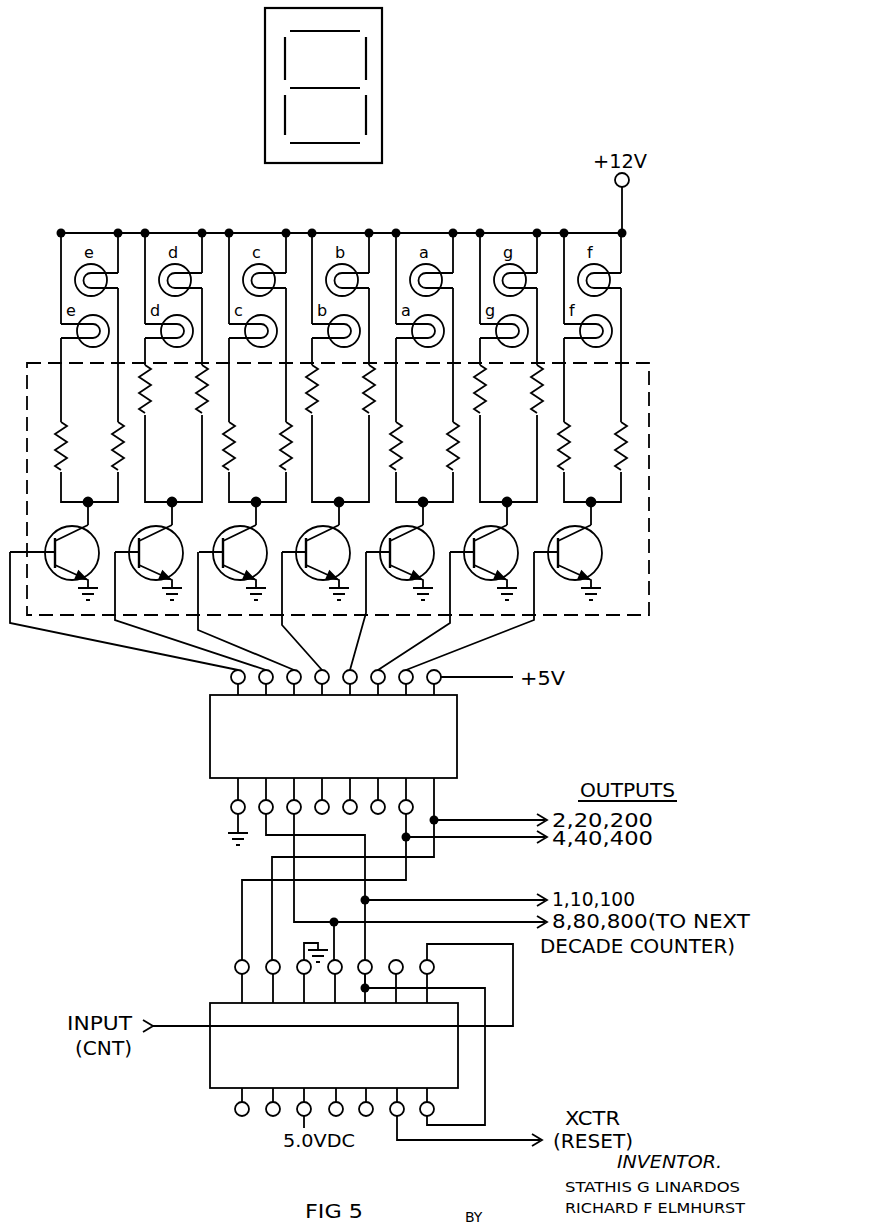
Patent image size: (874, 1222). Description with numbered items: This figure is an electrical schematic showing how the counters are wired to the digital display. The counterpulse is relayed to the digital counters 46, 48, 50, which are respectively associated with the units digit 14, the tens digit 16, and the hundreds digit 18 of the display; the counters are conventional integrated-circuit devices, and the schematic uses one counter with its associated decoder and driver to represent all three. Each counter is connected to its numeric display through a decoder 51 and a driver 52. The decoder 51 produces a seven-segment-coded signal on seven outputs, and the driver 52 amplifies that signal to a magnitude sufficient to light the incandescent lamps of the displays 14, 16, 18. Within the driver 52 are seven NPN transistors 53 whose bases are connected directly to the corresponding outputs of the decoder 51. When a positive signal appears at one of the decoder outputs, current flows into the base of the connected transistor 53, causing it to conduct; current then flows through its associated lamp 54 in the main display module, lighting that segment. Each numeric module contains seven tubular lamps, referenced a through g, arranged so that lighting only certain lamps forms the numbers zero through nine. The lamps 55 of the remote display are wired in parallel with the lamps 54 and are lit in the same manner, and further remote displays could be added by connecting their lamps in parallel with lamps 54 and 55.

The units digit display 14 is at (386, 85).
The tens digit display 16 is at (386, 85).
The hundreds digit display 18 is at (386, 85).
The digital counter 46 is at (268, 1052).
The digital counter 48 is at (268, 1052).
The digital counter 50 is at (210, 1073).
The decoder 51 is at (210, 748).
The driver 52 is at (649, 582).
The NPN transistor 53 is at (97, 544).
The lamp 54 is at (85, 265).
The lamp 55 is at (101, 345).